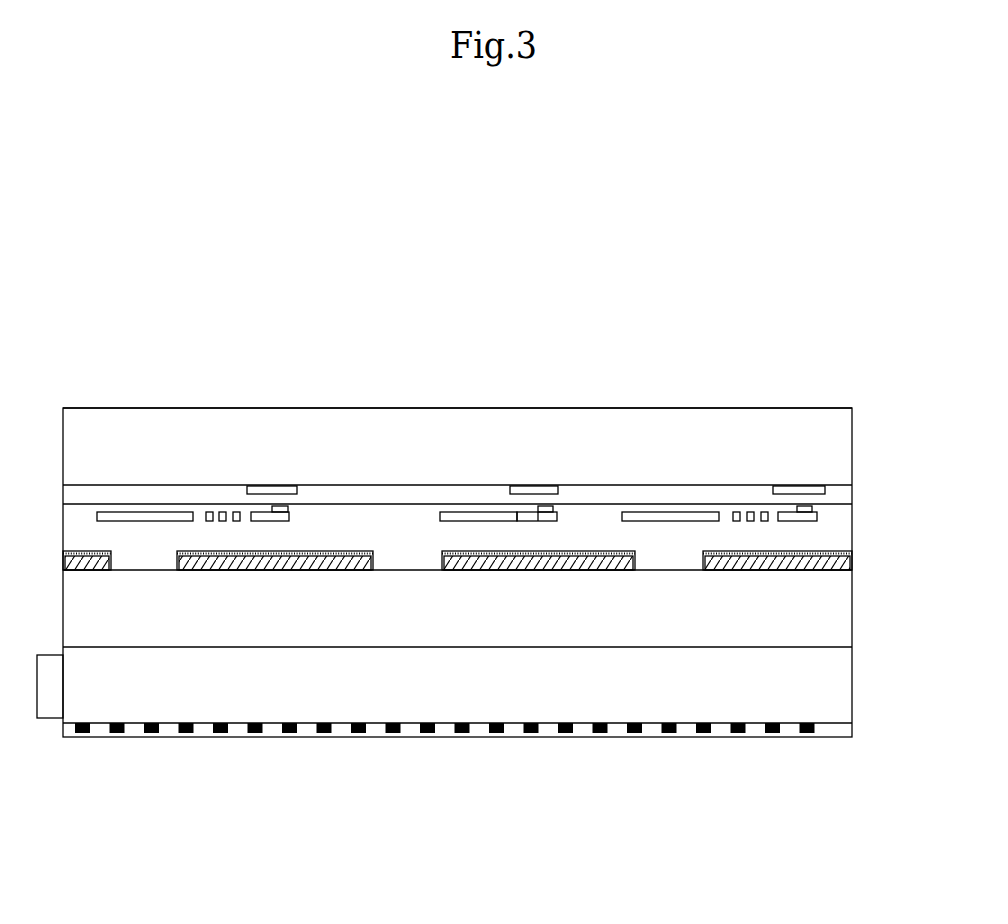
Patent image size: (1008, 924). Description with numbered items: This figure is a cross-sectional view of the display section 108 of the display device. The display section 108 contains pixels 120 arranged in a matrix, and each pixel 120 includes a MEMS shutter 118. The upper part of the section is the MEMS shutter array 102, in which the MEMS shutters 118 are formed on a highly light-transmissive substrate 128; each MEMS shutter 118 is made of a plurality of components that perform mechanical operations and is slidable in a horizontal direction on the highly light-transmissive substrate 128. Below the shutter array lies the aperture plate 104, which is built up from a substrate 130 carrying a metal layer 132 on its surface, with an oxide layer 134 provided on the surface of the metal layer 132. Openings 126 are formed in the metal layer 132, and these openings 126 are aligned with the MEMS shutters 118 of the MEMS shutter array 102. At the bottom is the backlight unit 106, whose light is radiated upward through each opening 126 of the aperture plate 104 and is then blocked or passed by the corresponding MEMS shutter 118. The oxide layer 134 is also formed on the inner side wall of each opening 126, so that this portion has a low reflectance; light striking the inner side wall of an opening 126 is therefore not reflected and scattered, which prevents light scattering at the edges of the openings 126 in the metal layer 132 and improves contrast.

The MEMS shutter array 102 is at (862, 407).
The aperture plate 104 is at (862, 543).
The backlight unit 106 is at (862, 648).
The display section 108 is at (110, 363).
The MEMS shutter 118 is at (168, 517).
The pixel 120 is at (263, 491).
The opening 126 is at (412, 565).
The highly light-transmissive substrate 128 is at (622, 428).
The substrate 130 is at (583, 618).
The metal layer 132 is at (330, 553).
The oxide layer 134 is at (360, 566).